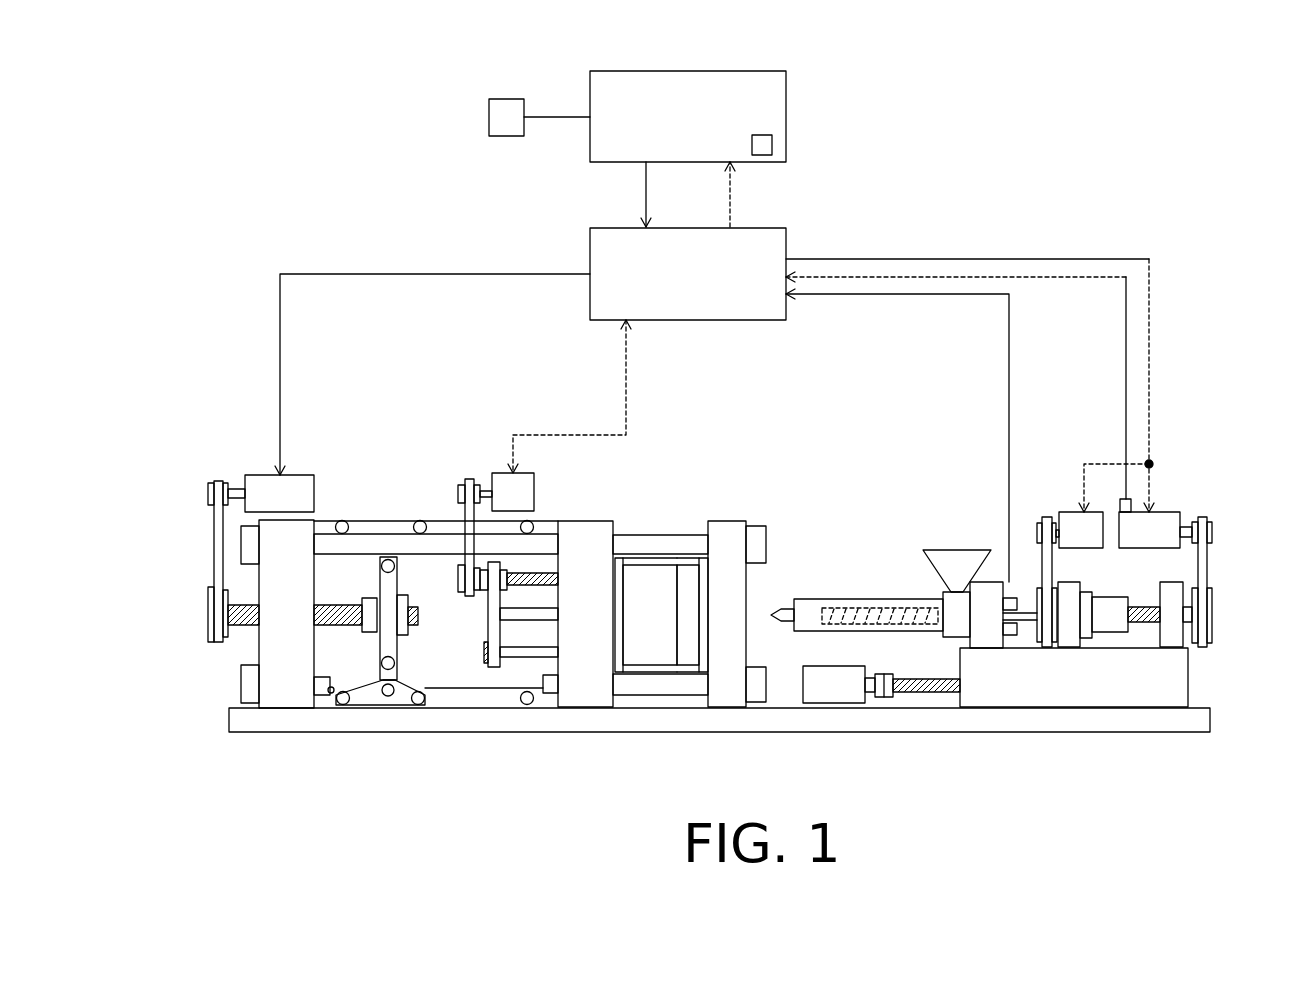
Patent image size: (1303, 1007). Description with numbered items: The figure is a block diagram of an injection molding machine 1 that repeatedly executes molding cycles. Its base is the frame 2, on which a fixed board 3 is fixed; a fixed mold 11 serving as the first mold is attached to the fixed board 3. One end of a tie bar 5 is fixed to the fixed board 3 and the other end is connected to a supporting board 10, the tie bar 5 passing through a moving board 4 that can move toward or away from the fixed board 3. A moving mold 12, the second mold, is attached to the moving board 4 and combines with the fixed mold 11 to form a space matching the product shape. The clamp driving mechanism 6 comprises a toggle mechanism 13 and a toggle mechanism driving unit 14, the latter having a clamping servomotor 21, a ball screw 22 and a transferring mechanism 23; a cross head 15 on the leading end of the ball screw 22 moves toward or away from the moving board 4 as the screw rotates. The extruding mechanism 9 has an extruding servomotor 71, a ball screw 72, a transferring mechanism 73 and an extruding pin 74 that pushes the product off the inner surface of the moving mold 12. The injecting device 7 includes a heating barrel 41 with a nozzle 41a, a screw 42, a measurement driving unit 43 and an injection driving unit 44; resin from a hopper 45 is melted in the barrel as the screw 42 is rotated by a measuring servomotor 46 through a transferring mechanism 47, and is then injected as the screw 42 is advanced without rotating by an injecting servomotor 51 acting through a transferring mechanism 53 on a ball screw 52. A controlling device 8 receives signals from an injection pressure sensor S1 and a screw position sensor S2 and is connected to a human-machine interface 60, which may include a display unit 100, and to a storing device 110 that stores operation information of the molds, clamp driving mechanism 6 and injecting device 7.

The injection molding machine 1 is at (942, 118).
The frame 2 is at (704, 725).
The fixed board 3 is at (729, 530).
The moving board 4 is at (590, 532).
The tie bar 5 is at (440, 545).
The clamp driving mechanism 6 is at (213, 447).
The injecting device 7 is at (1062, 484).
The controlling device 8 is at (786, 236).
The extruding mechanism 9 is at (482, 462).
The supporting board 10 is at (283, 693).
The fixed mold 11 is at (690, 575).
The moving mold 12 is at (635, 575).
The toggle mechanism 13 is at (415, 640).
The toggle mechanism driving unit 14 is at (207, 477).
The cross head 15 is at (392, 583).
The clamping servomotor 21 is at (298, 487).
The ball screw 22 is at (250, 622).
The transferring mechanism 23 is at (211, 555).
The heating barrel 41 is at (887, 600).
The nozzle 41a is at (782, 605).
The screw 42 is at (862, 625).
The measurement driving unit 43 is at (1052, 507).
The injection driving unit 44 is at (1187, 500).
The hopper 45 is at (952, 548).
The measuring servomotor 46 is at (1083, 508).
The transferring mechanism 47 is at (1040, 556).
The injecting servomotor 51 is at (1163, 508).
The ball screw 52 is at (1138, 627).
The transferring mechanism 53 is at (1211, 553).
The human-machine interface 60 is at (786, 101).
The extruding servomotor 71 is at (525, 487).
The ball screw 72 is at (530, 593).
The transferring mechanism 73 is at (467, 475).
The extruding pin 74 is at (515, 655).
The display unit 100 is at (772, 145).
The storing device 110 is at (487, 116).
The injection pressure sensor S1 is at (1008, 640).
The screw position sensor S2 is at (1116, 516).